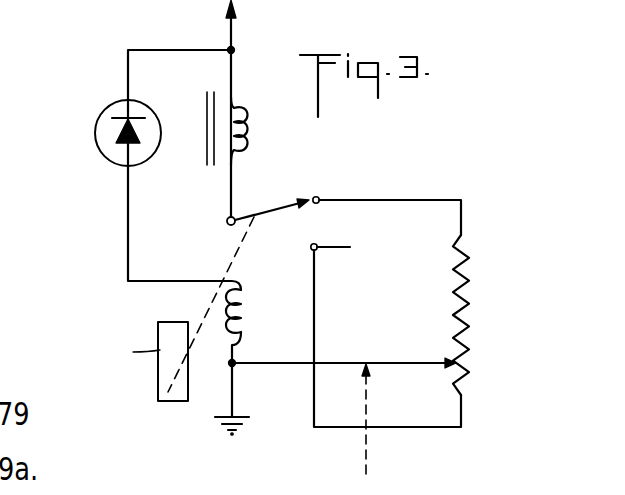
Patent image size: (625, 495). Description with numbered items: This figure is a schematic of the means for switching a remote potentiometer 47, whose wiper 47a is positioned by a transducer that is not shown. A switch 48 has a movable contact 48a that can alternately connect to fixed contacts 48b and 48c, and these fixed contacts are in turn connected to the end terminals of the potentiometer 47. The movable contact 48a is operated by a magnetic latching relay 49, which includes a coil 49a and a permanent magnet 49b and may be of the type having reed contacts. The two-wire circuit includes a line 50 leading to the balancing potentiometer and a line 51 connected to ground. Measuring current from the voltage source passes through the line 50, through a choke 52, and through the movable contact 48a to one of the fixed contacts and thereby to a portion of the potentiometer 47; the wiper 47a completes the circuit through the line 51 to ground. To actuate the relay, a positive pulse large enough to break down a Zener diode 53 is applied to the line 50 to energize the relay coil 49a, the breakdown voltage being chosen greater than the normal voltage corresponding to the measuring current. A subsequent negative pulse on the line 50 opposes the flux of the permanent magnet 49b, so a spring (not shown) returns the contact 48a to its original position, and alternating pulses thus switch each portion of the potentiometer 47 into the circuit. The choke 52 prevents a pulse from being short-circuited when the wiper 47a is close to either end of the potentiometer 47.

The remote potentiometer 47 is at (484, 339).
The wiper 47a is at (400, 360).
The switch 48 is at (293, 219).
The movable contact 48a is at (283, 200).
The fixed contact 48b is at (319, 197).
The fixed contact 48c is at (386, 327).
The magnetic latching relay 49 is at (186, 306).
The relay coil 49a is at (244, 323).
The permanent magnet 49b is at (172, 403).
The line 50 is at (234, 24).
The line 51 is at (233, 403).
The choke 52 is at (243, 130).
The Zener diode 53 is at (118, 152).